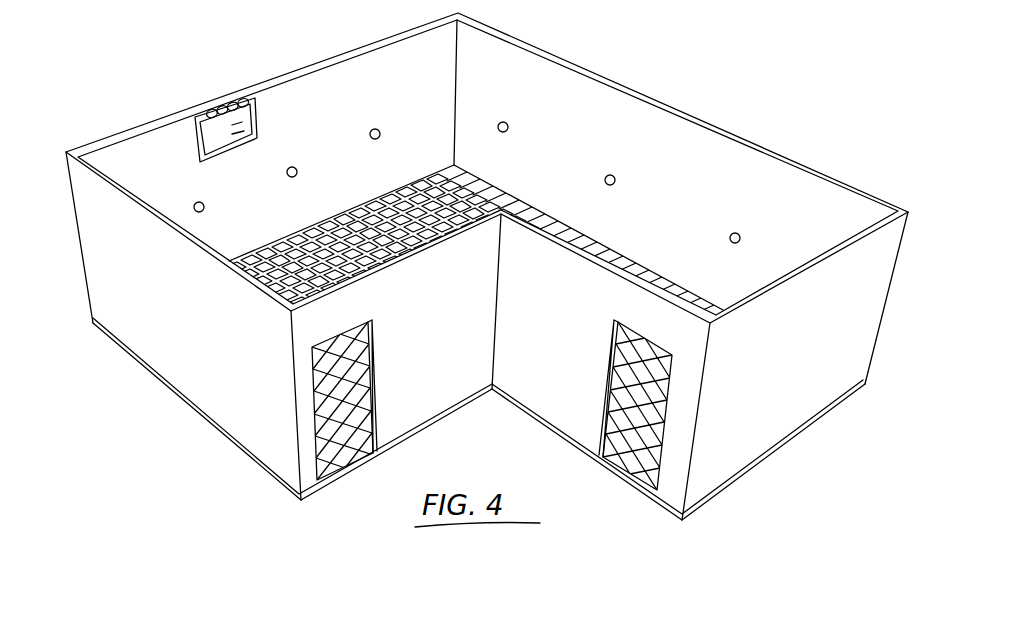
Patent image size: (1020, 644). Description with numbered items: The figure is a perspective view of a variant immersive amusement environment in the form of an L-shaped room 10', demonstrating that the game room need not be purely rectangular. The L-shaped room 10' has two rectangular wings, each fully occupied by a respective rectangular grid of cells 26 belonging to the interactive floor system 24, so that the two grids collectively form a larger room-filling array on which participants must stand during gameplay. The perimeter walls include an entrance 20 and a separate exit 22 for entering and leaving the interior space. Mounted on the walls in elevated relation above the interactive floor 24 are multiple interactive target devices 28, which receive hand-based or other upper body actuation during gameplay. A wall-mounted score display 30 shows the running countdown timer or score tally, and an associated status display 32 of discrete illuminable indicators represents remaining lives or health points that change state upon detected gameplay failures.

The L-shaped room 10' is at (487, 266).
The entrance 20 is at (348, 452).
The exit 22 is at (632, 453).
The interactive floor system 24 is at (352, 210).
The rectangular cells 26 is at (416, 237).
The interactive target devices 28 is at (204, 205).
The score display 30 is at (248, 137).
The status display 32 is at (254, 107).